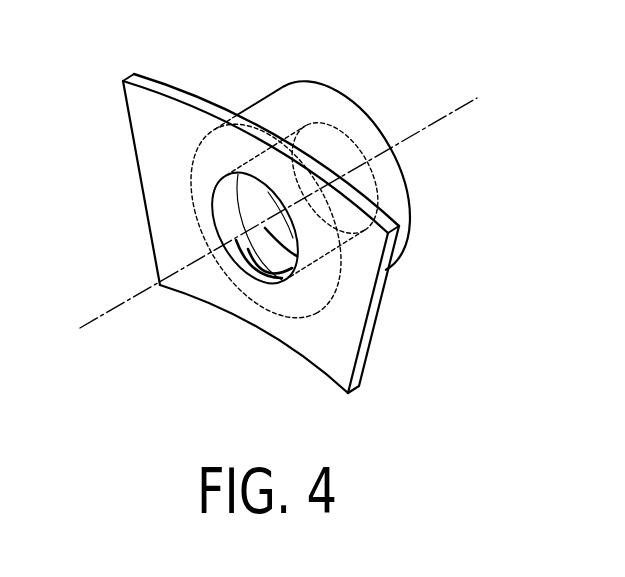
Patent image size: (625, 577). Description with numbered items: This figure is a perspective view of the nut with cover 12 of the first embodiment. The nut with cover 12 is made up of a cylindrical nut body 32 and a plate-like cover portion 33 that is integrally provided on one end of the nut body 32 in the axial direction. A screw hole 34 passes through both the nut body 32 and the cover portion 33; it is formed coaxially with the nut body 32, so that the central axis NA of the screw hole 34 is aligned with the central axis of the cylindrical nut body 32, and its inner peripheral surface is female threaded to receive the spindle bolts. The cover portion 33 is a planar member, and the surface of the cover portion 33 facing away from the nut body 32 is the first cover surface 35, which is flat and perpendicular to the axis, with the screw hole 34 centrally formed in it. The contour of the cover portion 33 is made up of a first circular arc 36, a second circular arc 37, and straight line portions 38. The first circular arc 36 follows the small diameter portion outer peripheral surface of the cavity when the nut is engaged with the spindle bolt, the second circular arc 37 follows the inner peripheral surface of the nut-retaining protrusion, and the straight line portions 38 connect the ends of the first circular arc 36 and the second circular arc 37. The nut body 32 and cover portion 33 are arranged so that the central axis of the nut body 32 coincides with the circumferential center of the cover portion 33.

The nut with cover 12 is at (271, 223).
The nut body 32 is at (273, 98).
The cover portion 33 is at (247, 231).
The screw hole 34 is at (237, 226).
The first cover surface 35 is at (345, 335).
The first circular arc 36 is at (285, 350).
The second circular arc 37 is at (202, 97).
The straight line portions 38 is at (135, 156).
The central axis NA is at (442, 122).